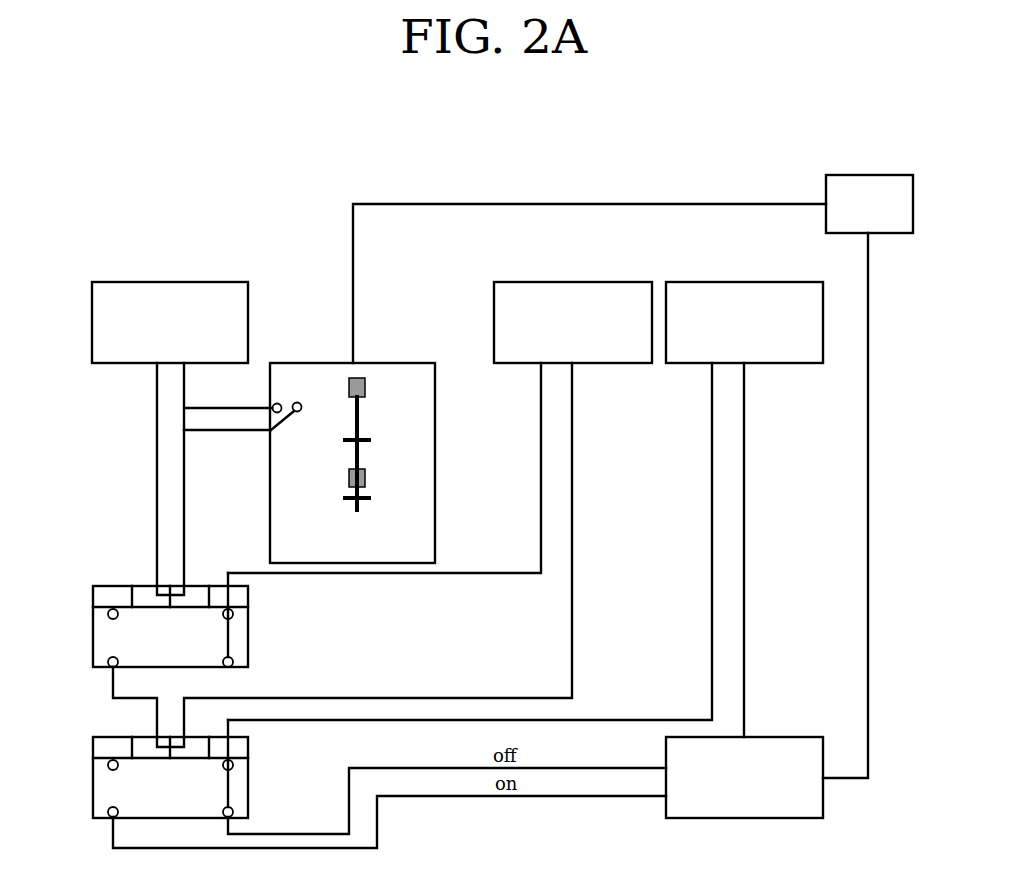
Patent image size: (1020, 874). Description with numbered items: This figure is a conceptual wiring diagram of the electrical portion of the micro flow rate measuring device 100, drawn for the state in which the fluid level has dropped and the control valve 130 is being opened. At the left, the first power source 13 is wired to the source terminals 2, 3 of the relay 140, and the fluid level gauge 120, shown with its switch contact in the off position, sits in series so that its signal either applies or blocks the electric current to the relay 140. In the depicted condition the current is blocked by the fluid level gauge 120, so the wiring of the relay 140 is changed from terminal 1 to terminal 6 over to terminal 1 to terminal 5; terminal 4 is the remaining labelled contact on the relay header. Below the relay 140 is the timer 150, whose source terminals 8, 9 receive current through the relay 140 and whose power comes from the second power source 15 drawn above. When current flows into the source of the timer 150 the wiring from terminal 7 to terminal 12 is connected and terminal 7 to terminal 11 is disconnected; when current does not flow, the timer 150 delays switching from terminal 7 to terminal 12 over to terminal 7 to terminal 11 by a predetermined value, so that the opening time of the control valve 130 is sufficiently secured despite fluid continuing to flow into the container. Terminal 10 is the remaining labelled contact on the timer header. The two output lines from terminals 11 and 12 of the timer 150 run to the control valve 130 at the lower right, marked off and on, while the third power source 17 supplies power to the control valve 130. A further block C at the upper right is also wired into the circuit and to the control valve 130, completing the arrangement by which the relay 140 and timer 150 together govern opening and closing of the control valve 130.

The power control circuit 100 is at (273, 265).
The first power source 13 is at (92, 316).
The fluid level gauge 120 is at (306, 363).
The second power source 15 is at (573, 282).
The third power source 17 is at (744, 282).
The controller C is at (868, 175).
The control valve 130 is at (823, 805).
The relay 140 is at (136, 632).
The timer 150 is at (136, 783).
The relay terminal 1 is at (236, 597).
The relay source terminal 2 is at (195, 597).
The relay source terminal 3 is at (140, 597).
The relay terminal 4 is at (110, 597).
The relay terminal 5 is at (232, 674).
The relay terminal 6 is at (106, 674).
The timer terminal 7 is at (236, 748).
The timer source terminal 8 is at (195, 748).
The timer source terminal 9 is at (140, 748).
The relay terminal 10 is at (110, 748).
The timer terminal 11 is at (219, 826).
The timer terminal 12 is at (102, 826).